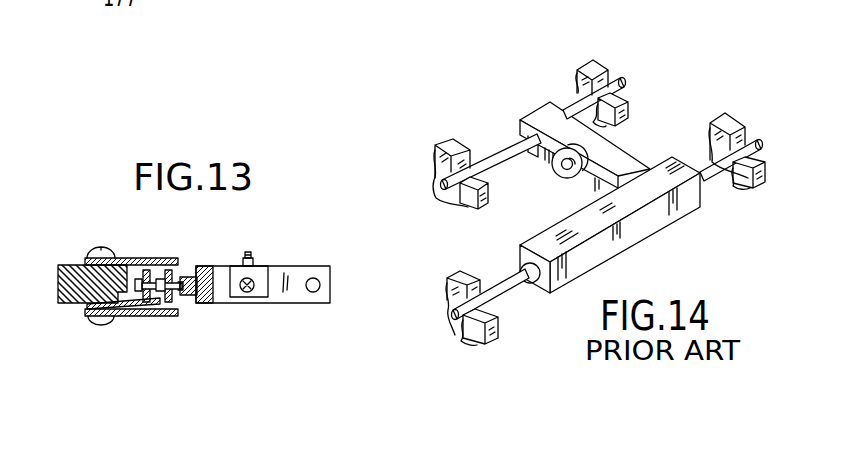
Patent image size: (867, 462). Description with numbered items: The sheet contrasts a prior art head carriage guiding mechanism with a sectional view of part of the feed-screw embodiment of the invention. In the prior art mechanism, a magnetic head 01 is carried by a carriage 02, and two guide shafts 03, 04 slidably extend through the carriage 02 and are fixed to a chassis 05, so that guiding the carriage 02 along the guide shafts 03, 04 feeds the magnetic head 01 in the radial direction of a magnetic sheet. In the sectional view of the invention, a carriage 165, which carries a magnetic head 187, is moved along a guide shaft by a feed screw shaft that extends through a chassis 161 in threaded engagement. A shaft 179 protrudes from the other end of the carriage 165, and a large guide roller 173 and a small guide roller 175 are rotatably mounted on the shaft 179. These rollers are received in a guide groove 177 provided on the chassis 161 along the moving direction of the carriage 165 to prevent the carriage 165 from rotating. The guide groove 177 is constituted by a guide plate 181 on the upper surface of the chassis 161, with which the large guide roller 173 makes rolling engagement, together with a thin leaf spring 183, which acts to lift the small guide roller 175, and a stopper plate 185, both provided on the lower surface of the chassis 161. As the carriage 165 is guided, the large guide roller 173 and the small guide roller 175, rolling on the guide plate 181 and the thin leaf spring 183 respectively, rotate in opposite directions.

In FIG. 13, the chassis 161 is at (80, 306).
In FIG. 13, the carriage 165 is at (290, 268).
In FIG. 13, the large guide roller 173 is at (171, 268).
In FIG. 13, the small guide roller 175 is at (148, 269).
In FIG. 13, the guide groove 177 is at (173, 327).
In FIG. 13, the shaft 179 is at (173, 299).
In FIG. 13, the guide plate 181 is at (130, 257).
In FIG. 13, the thin leaf spring 183 is at (152, 317).
In FIG. 13, the stopper plate 185 is at (130, 315).
In FIG. 13, the magnetic head 187 is at (251, 253).
In FIG. 14, the magnetic head 01 is at (590, 158).
In FIG. 14, the carriage 02 is at (633, 233).
In FIG. 14, the guide shaft 03 is at (503, 150).
In FIG. 14, the guide shaft 04 is at (508, 295).
In FIG. 14, the chassis 05 is at (593, 58).